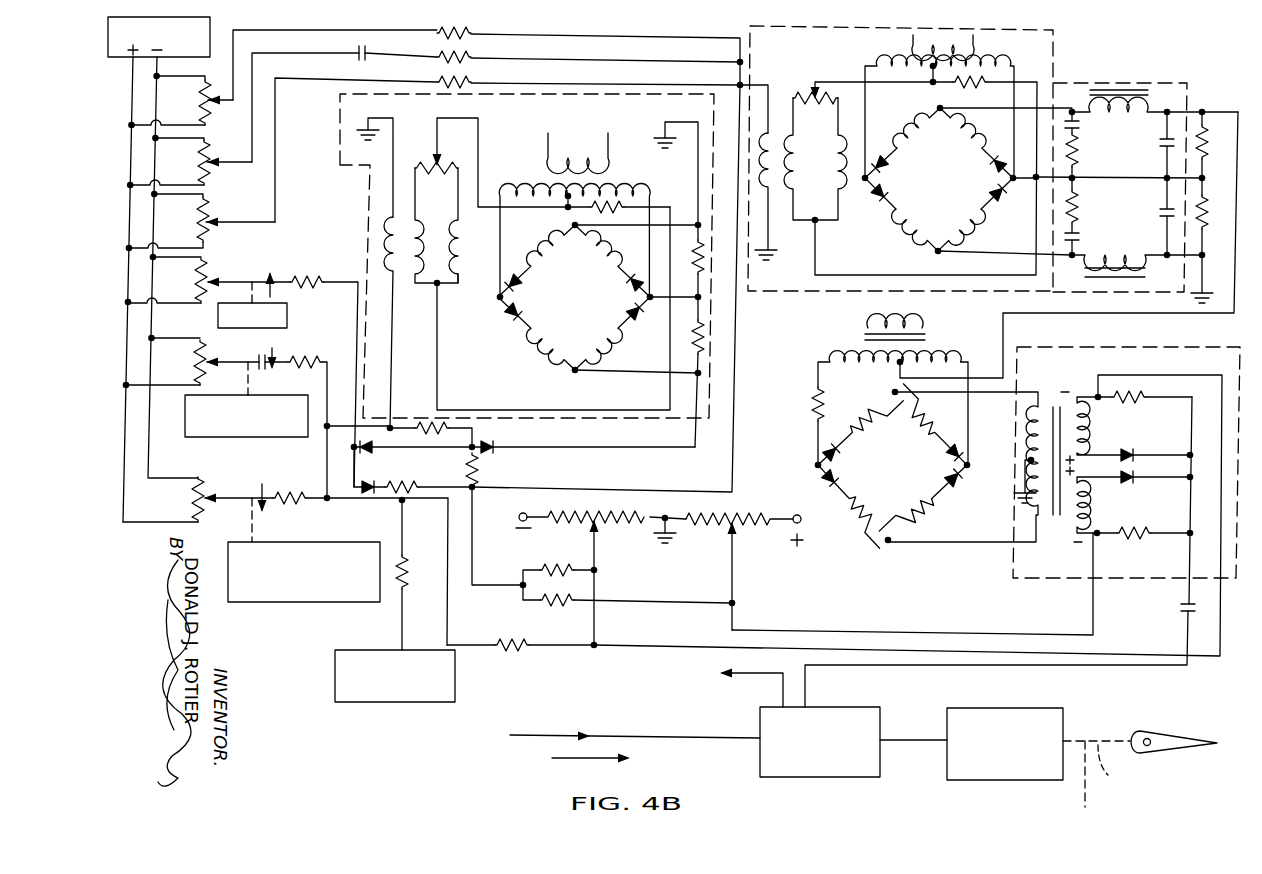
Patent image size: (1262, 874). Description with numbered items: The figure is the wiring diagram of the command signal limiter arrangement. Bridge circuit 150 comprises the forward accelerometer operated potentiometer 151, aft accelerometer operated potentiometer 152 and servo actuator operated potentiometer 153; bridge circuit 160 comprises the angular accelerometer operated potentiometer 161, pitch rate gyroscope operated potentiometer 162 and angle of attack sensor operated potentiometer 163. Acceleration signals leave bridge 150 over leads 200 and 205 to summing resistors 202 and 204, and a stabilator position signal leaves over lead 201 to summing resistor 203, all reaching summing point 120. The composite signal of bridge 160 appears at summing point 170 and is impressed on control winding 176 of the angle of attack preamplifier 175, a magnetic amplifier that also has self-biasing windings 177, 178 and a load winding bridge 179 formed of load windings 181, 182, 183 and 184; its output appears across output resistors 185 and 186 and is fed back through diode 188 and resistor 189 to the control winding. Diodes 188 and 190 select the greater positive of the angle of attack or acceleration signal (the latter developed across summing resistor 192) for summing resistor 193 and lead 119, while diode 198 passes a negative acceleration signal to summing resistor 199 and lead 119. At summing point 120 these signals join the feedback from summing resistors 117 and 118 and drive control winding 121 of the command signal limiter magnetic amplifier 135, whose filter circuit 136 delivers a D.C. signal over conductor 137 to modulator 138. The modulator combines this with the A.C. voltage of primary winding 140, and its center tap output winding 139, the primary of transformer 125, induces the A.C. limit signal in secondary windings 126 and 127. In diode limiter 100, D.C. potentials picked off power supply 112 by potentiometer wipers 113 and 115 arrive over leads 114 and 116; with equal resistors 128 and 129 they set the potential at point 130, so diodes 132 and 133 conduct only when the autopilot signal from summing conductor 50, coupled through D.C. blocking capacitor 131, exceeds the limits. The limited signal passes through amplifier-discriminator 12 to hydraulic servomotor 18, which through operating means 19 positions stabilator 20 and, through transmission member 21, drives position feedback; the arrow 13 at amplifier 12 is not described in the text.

The amplifier-discriminator device 12 is at (805, 778).
The feedback signal line 13 is at (752, 677).
The hydraulic servomotor 18 is at (993, 780).
The operating means 19 is at (1098, 763).
The stabilator 20 is at (1174, 753).
The transmission member 21 is at (1085, 800).
The summing conductor 50 is at (530, 735).
The diode limiter 100 is at (1213, 348).
The D.C. power supply 112 is at (643, 563).
The potentiometer wiper 113 is at (733, 548).
The lead 114 is at (835, 631).
The potentiometer wiper 115 is at (593, 545).
The lead 116 is at (666, 648).
The summing resistor 117 is at (548, 563).
The summing resistor 118 is at (551, 605).
The lead 119 is at (567, 491).
The summing point 120 is at (738, 84).
The control winding 121 is at (766, 195).
The transformer 125 is at (1055, 522).
The secondary winding 126 is at (1083, 421).
The secondary winding 127 is at (1082, 496).
The resistor 128 is at (1131, 400).
The resistor 129 is at (1133, 526).
The point 130 is at (1192, 470).
The capacitor 131 is at (1183, 616).
The diode 132 is at (1132, 448).
The diode 133 is at (1120, 473).
The command signal limiter amplifier 135 is at (1054, 50).
The filter circuit 136 is at (1093, 83).
The output circuit conductor 137 is at (1068, 313).
The modulator circuit 138 is at (863, 536).
The center tap output winding 139 is at (1042, 400).
The primary winding 140 is at (866, 328).
The bridge circuit 150 is at (258, 216).
The forward accelerometer operated potentiometer 151 is at (218, 114).
The aft accelerometer operated potentiometer 152 is at (213, 226).
The servo actuator operated potentiometer 153 is at (215, 171).
The bridge circuit 160 is at (345, 260).
The angular accelerometer operated potentiometer 161 is at (213, 273).
The pitch rate gyroscope operated potentiometer 162 is at (213, 355).
The angle of attack sensor operated potentiometer 163 is at (215, 491).
The summing point 170 is at (391, 426).
The angle of attack preamplifier 175 is at (338, 115).
The control winding 176 is at (394, 325).
The self-biasing winding 177 is at (542, 264).
The self-biasing winding 178 is at (458, 235).
The load winding bridge 179 is at (586, 313).
The load winding 181 is at (602, 245).
The load winding 182 is at (623, 352).
The load winding 183 is at (530, 351).
The load winding 184 is at (548, 247).
The amplifier output resistor 185 is at (690, 270).
The amplifier output resistor 186 is at (690, 372).
The diode 188 is at (491, 443).
The resistor 189 is at (431, 435).
The diode 190 is at (368, 445).
The summing resistor 192 is at (324, 381).
The summing resistor 193 is at (475, 472).
The diode 198 is at (372, 484).
The summing resistor 199 is at (414, 485).
The lead 200 is at (296, 31).
The lead 201 is at (270, 54).
The summing resistor 202 is at (467, 36).
The summing resistor 203 is at (467, 58).
The summing resistor 204 is at (469, 81).
The lead 205 is at (283, 78).